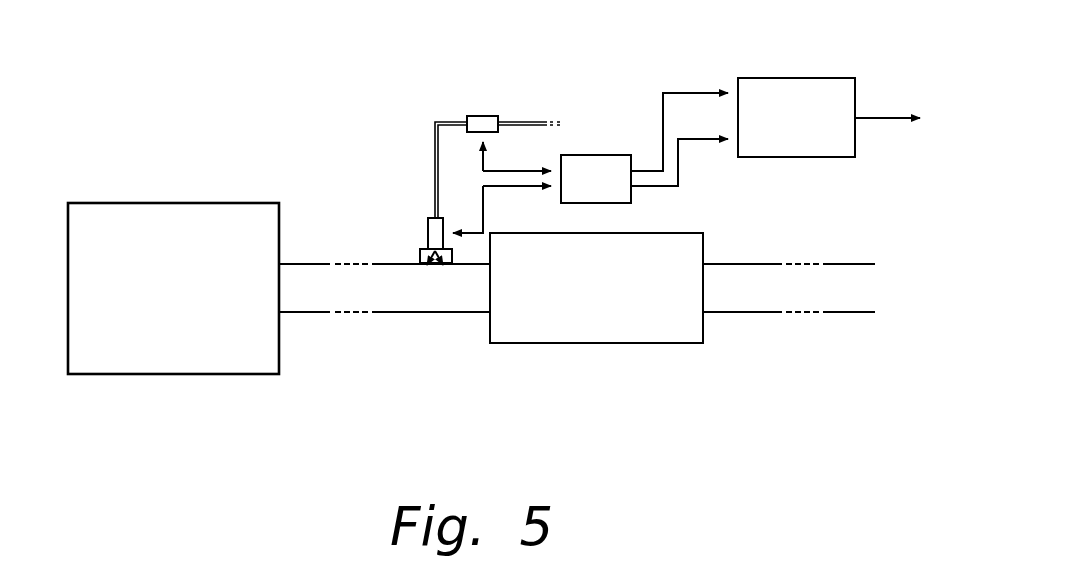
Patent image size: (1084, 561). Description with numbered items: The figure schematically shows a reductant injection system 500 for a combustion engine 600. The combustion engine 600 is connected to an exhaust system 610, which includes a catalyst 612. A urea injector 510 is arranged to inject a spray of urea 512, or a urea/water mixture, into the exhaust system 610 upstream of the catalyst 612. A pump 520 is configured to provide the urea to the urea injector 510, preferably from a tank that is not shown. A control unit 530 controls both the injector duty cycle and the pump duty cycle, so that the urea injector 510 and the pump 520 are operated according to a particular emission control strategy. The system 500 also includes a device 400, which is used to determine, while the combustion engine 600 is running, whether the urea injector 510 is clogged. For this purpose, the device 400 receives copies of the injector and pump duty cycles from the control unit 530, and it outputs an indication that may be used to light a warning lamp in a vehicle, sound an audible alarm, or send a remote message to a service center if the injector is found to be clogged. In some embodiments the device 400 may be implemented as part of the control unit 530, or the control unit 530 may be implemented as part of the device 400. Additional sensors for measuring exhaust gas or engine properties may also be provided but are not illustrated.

The reductant injection system 500 is at (308, 78).
The combustion engine 600 is at (197, 302).
The exhaust system 610 is at (883, 366).
The catalyst 612 is at (619, 302).
The urea injector 510 is at (428, 218).
The spray of urea 512 is at (421, 252).
The pump 520 is at (479, 116).
The control unit 530 is at (597, 155).
The device 400 is at (821, 130).